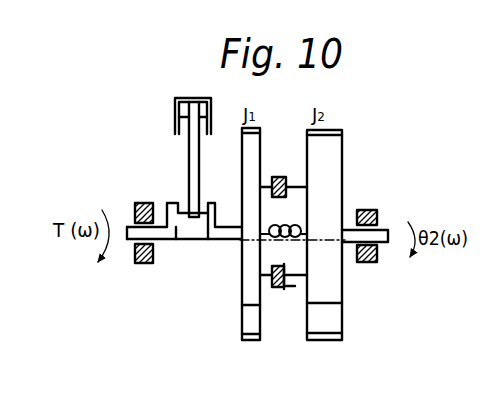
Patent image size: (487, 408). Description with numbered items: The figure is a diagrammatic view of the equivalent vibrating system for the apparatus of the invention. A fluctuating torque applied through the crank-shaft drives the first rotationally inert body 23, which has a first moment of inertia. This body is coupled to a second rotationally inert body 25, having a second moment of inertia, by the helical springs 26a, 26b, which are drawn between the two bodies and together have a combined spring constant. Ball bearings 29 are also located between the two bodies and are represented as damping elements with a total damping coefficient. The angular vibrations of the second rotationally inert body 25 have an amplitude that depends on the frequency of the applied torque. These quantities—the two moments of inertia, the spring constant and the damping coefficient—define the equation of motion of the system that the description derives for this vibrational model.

The rotationally inert body 23 is at (255, 148).
The rotationally inert body 25 is at (337, 153).
The ball bearings 29 is at (281, 178).
The helical spring 26a is at (303, 226).
The helical spring 26b is at (303, 226).